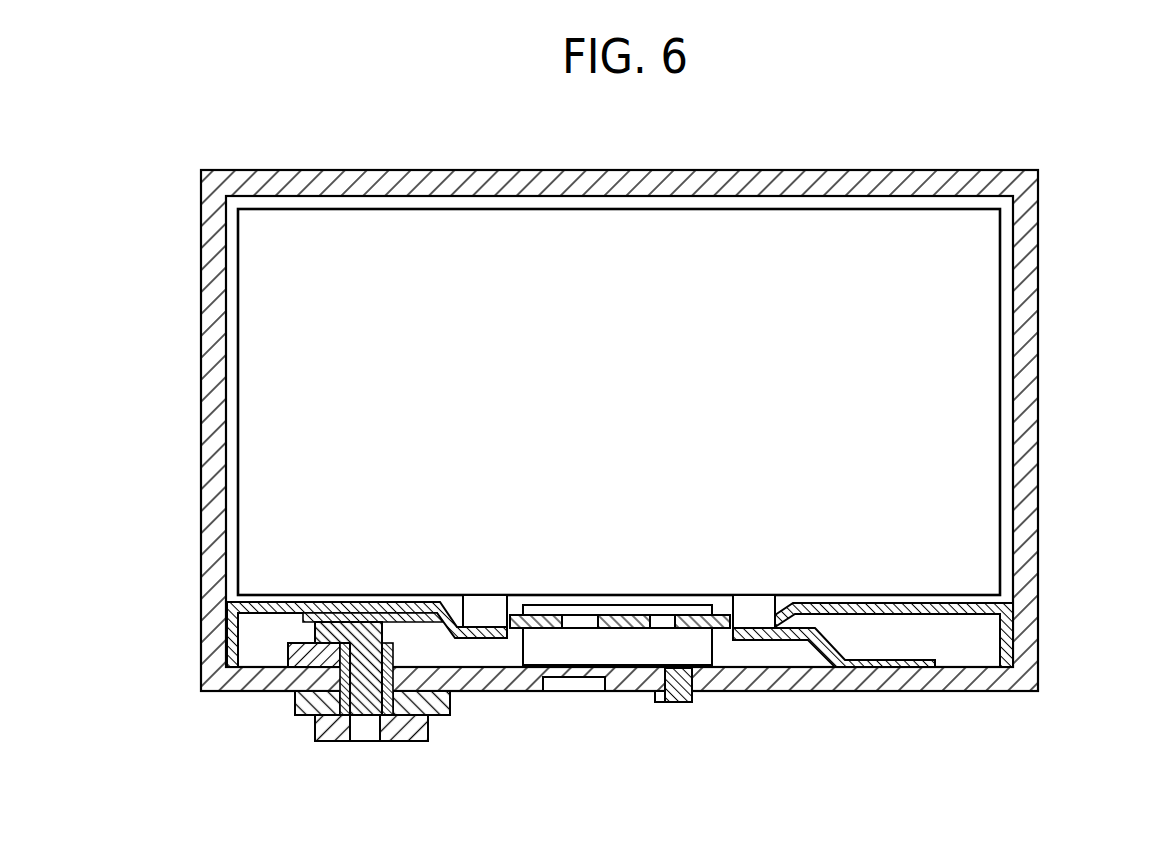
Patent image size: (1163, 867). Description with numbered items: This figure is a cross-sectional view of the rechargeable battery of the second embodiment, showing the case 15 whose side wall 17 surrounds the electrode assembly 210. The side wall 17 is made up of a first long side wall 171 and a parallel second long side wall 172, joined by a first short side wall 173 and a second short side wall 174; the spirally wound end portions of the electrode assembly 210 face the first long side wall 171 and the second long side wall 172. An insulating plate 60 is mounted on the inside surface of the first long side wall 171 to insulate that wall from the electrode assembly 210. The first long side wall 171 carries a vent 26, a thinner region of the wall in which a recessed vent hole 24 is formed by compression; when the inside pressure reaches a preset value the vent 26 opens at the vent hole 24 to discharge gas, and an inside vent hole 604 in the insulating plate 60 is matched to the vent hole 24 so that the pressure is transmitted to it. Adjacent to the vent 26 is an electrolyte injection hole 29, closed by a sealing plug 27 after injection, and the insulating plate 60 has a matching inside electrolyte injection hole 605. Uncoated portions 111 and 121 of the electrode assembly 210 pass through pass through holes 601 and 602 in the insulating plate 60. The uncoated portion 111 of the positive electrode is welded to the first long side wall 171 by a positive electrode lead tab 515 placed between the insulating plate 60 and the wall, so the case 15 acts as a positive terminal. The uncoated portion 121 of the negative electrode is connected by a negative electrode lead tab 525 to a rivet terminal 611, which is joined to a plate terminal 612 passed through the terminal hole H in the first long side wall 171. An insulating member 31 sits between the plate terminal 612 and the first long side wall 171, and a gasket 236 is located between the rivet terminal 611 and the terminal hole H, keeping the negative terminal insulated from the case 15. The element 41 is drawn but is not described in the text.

The case 15 is at (595, 468).
The side wall 17 is at (588, 429).
The first long side wall 171 is at (790, 680).
The second long side wall 172 is at (780, 171).
The first short side wall 173 is at (1038, 313).
The second short side wall 174 is at (202, 369).
The electrode assembly 210 is at (228, 500).
The insulating plate 60 is at (672, 677).
The positive electrode lead tab 515 is at (880, 663).
The negative electrode lead tab 525 is at (470, 632).
The pass through hole 602 is at (466, 604).
The pass through hole 601 is at (742, 604).
The uncoated portion of the negative electrode 121 is at (493, 604).
The uncoated portion of the positive electrode 111 is at (763, 604).
The inside vent hole 604 is at (580, 617).
The inside electrolyte injection hole 605 is at (660, 617).
The circuit board housing 41 is at (700, 648).
The gasket 236 is at (302, 652).
The insulating member 31 is at (312, 708).
The rivet terminal 611 is at (360, 723).
The plate terminal 612 is at (400, 732).
The terminal hole H is at (371, 723).
The vent hole 24 is at (563, 680).
The vent 26 is at (583, 678).
The electrolyte injection hole 29 is at (662, 670).
The sealing plug 27 is at (673, 701).